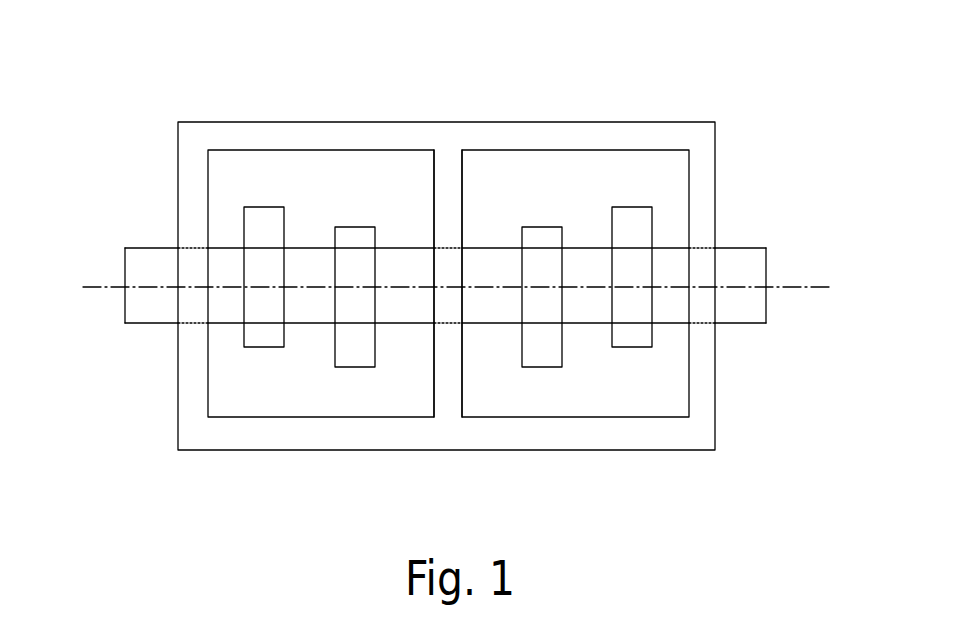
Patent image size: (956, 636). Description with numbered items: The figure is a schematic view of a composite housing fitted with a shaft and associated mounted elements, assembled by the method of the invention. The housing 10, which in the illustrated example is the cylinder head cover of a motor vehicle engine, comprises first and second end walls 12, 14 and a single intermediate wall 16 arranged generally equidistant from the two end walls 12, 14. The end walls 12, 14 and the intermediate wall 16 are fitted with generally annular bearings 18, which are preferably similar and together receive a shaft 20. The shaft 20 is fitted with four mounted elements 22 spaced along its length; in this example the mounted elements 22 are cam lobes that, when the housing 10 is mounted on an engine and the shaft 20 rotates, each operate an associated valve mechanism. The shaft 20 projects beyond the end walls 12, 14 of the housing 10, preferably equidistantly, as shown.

The housing 10 is at (722, 132).
The first end wall 12 is at (192, 383).
The second end wall 14 is at (717, 392).
The intermediate wall 16 is at (462, 177).
The annular bearing 18 is at (196, 259).
The shaft 20 is at (135, 302).
The mounted element 22 is at (632, 220).